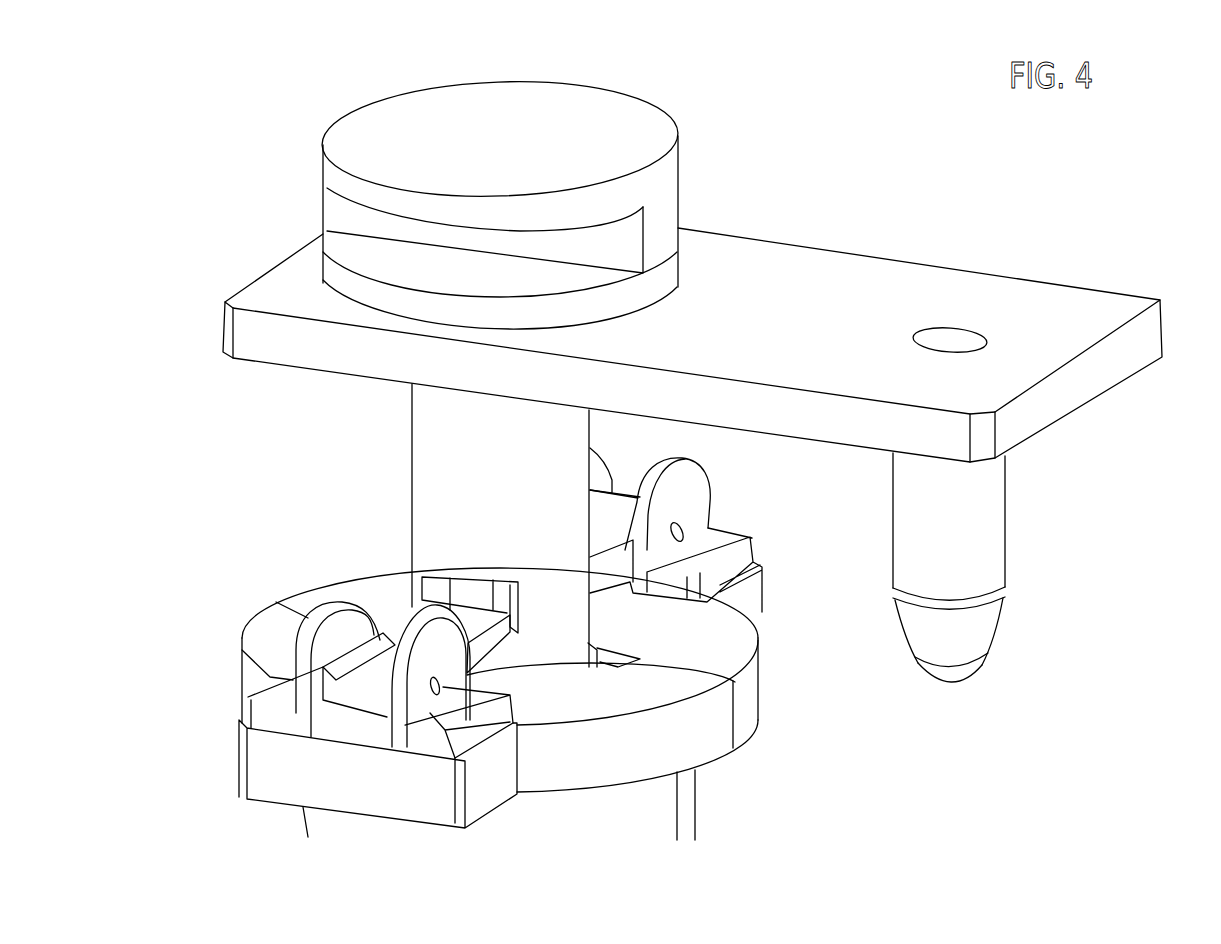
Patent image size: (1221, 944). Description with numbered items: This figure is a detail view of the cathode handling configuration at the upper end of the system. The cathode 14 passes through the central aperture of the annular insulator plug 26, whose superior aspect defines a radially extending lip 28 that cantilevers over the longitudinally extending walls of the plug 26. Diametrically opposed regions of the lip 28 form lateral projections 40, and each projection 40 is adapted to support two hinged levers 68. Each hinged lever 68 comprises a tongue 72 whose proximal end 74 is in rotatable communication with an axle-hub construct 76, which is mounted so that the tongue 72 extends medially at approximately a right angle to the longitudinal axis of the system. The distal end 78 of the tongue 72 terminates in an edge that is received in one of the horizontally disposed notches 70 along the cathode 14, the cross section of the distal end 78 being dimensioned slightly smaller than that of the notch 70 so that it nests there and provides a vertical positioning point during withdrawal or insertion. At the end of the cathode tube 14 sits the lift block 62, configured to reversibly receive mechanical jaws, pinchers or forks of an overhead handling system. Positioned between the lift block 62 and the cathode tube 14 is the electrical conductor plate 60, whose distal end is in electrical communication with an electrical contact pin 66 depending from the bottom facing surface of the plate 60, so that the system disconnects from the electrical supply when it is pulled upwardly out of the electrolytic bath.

The cathode 14 is at (526, 525).
The insulator plug 26 is at (500, 625).
The lip 28 is at (500, 715).
The lateral projection 40 is at (478, 786).
The electrical conductor plate 60 is at (692, 345).
The lift block 62 is at (500, 202).
The electrical contact pin 66 is at (949, 567).
The hinged lever 68 is at (735, 517).
The notch 70 is at (493, 597).
The tongue 72 is at (387, 640).
The proximal end 74 is at (343, 683).
The axle-hub construct 76 is at (470, 703).
The distal end 78 is at (472, 620).